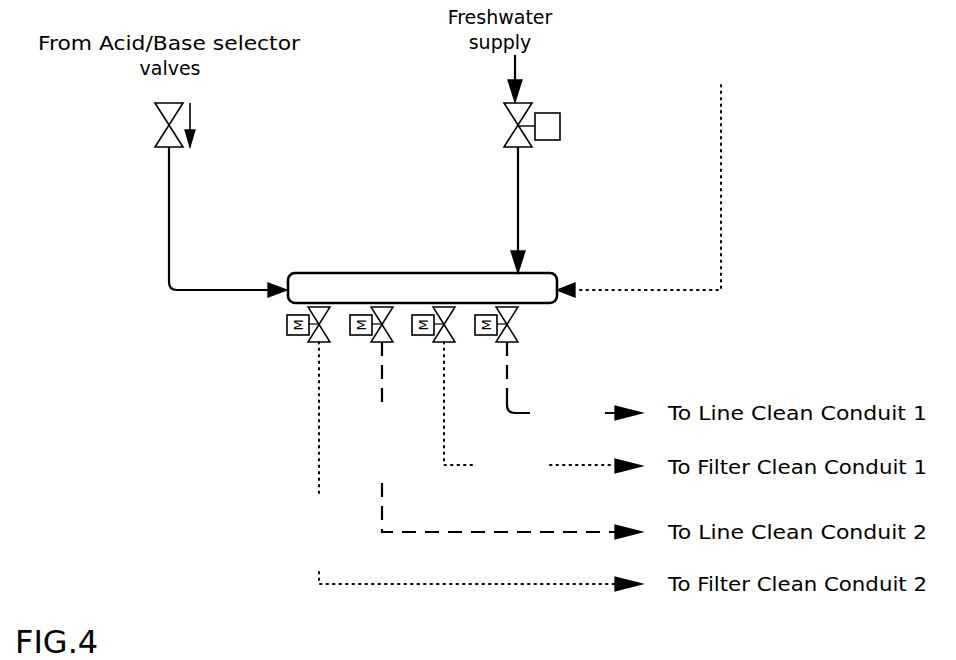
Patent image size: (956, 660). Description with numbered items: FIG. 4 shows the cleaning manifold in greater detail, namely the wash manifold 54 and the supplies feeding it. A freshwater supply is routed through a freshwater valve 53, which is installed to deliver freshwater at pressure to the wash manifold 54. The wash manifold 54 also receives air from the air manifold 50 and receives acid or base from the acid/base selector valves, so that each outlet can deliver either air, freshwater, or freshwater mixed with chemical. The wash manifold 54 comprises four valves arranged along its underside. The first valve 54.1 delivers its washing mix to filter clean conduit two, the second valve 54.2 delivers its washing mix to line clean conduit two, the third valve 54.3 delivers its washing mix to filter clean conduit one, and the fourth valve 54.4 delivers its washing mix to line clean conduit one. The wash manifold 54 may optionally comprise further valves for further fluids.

The air manifold 50 is at (707, 165).
The freshwater valve 53 is at (420, 125).
The wash manifold 54 is at (422, 276).
The first valve 54.1 is at (459, 466).
The second valve 54.2 is at (489, 440).
The third valve 54.3 is at (543, 430).
The fourth valve 54.4 is at (574, 382).